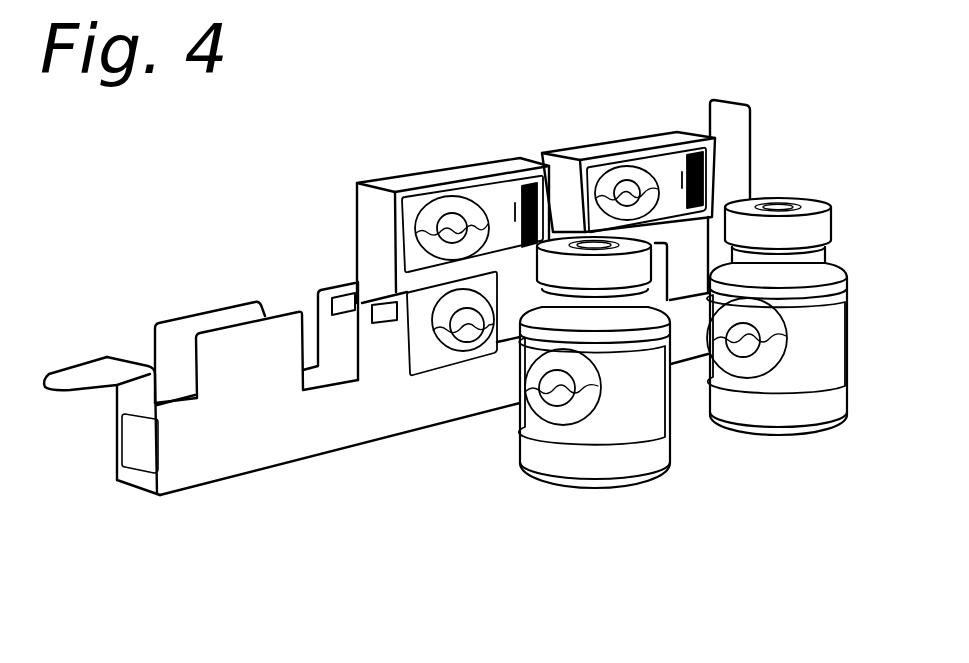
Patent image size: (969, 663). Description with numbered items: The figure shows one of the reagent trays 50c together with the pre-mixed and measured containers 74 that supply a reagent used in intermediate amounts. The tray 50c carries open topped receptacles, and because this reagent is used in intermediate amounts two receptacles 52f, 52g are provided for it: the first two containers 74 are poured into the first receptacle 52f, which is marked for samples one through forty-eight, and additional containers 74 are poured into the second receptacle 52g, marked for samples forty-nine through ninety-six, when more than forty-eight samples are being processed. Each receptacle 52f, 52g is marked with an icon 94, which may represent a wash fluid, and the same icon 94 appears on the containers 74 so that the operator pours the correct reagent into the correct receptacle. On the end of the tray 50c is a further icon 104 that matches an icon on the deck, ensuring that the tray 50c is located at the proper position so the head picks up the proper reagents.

The tray 50c is at (249, 443).
The icon 104 is at (130, 453).
The receptacle 52f is at (408, 185).
The receptacle 52g is at (595, 152).
The icon 94 is at (494, 202).
The container 74 is at (585, 471).